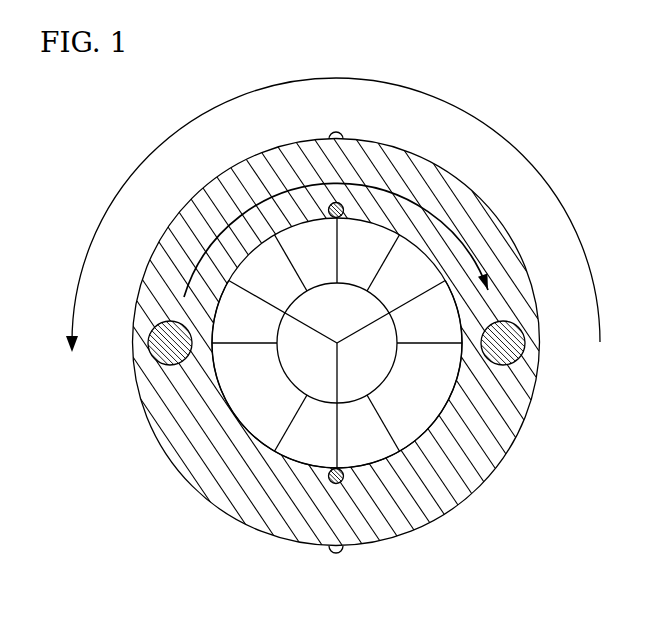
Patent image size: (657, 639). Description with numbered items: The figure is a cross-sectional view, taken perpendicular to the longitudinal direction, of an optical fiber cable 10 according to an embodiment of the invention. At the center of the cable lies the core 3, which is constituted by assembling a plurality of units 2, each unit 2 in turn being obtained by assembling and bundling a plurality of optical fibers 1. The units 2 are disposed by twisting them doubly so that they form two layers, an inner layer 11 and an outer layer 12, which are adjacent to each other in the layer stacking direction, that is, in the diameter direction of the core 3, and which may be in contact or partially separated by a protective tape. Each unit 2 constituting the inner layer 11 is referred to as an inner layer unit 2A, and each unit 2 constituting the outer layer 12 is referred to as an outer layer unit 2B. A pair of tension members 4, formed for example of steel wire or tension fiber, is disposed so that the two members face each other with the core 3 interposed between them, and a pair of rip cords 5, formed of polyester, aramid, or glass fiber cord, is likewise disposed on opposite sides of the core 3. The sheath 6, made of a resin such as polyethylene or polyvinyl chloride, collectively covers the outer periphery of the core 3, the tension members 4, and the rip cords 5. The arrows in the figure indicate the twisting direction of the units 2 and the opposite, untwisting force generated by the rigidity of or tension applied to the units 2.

The optical fiber 1 is at (310, 355).
The unit 2 is at (337, 343).
The inner layer unit 2A is at (310, 367).
The outer layer unit 2B is at (417, 410).
The core 3 is at (283, 373).
The tension member 4 is at (152, 326).
The rip cord 5 is at (338, 202).
The sheath 6 is at (213, 477).
The optical fiber cable 10 is at (533, 150).
The inner layer 11 is at (249, 257).
The outer layer 12 is at (291, 221).